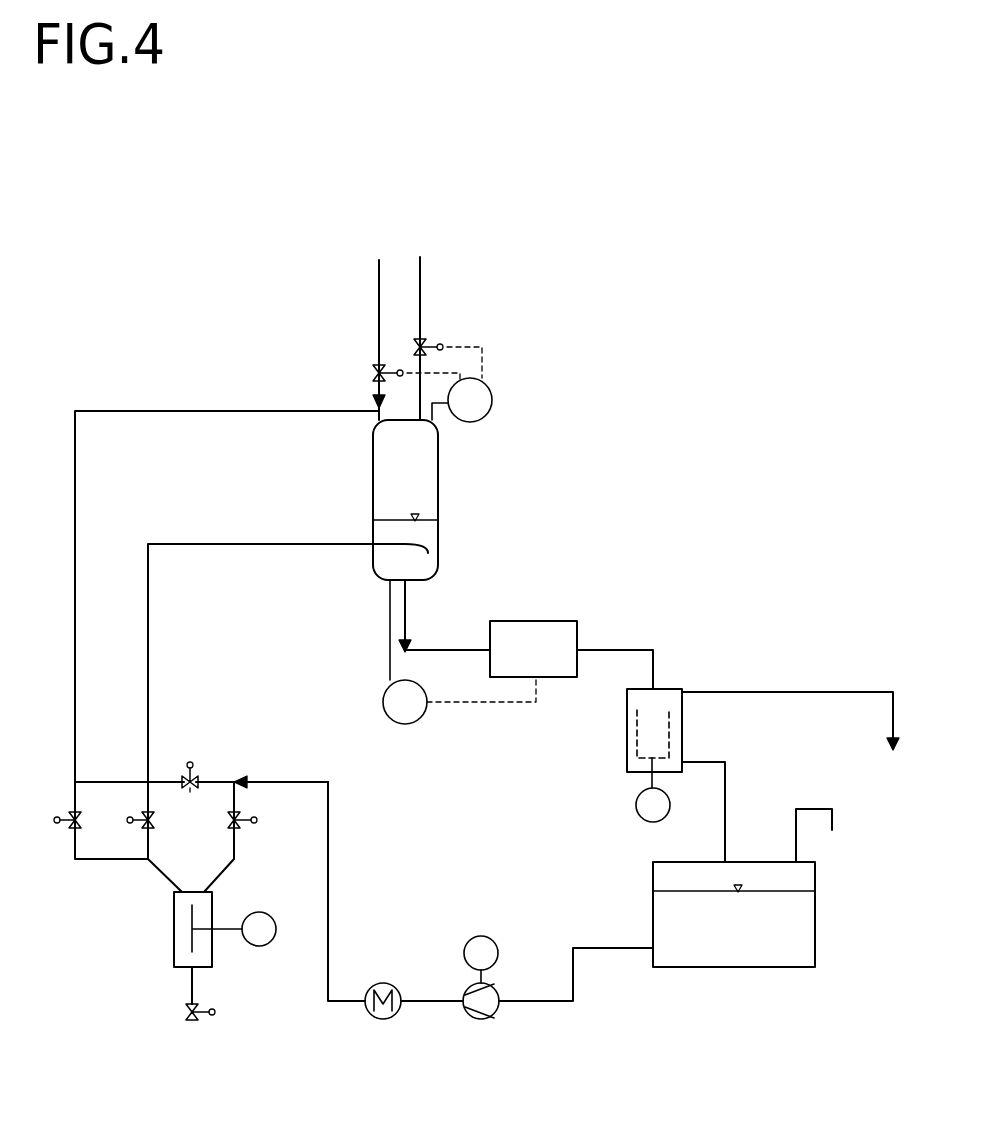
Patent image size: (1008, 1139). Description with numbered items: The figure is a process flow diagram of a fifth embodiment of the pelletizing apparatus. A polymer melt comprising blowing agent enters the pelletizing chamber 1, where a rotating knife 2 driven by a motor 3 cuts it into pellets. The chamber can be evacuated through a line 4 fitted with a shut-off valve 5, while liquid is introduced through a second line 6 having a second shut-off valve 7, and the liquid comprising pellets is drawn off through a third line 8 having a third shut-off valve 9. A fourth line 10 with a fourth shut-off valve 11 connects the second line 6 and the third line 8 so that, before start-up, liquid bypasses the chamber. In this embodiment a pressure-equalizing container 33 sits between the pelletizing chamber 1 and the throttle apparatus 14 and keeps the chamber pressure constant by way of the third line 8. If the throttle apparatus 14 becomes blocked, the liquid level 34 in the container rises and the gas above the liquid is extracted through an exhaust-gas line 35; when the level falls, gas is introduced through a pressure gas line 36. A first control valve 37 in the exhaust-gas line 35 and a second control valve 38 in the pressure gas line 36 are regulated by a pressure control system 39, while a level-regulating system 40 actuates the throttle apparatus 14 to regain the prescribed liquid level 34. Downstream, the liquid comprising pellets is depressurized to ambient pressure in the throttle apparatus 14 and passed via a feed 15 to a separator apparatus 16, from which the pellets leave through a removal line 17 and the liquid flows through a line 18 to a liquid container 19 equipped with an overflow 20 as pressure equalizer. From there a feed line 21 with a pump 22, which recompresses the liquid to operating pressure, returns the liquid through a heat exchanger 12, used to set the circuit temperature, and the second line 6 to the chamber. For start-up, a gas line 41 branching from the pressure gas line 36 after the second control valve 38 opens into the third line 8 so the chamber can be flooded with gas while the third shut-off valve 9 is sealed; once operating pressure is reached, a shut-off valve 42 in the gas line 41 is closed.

The pelletizing chamber 1 is at (174, 920).
The rotating knife 2 is at (198, 940).
The motor 3 is at (270, 920).
The line 4 is at (190, 990).
The shut-off valve 5 is at (198, 1020).
The second line 6 is at (236, 850).
The second shut-off valve 7 is at (240, 815).
The third line 8 is at (265, 545).
The third shut-off valve 9 is at (148, 830).
The fourth line 10 is at (197, 775).
The fourth shut-off valve 11 is at (190, 790).
The heat exchanger 12 is at (375, 1015).
The throttle apparatus 14 is at (520, 621).
The feed 15 is at (607, 650).
The separator apparatus 16 is at (627, 728).
The removal line 17 is at (805, 692).
The line 18 is at (725, 770).
The liquid container 19 is at (815, 925).
The overflow 20 is at (832, 820).
The feed line 21 is at (558, 1001).
The pump 22 is at (481, 1020).
The pressure-equalizing container 33 is at (440, 478).
The liquid level 34 is at (375, 520).
The exhaust-gas line 35 is at (420, 296).
The pressure gas line 36 is at (379, 312).
The first control valve 37 is at (430, 340).
The second control valve 38 is at (370, 370).
The pressure control system 39 is at (492, 398).
The level-regulating system 40 is at (383, 700).
The gas line 41 is at (75, 500).
The shut-off valve 42 is at (75, 830).